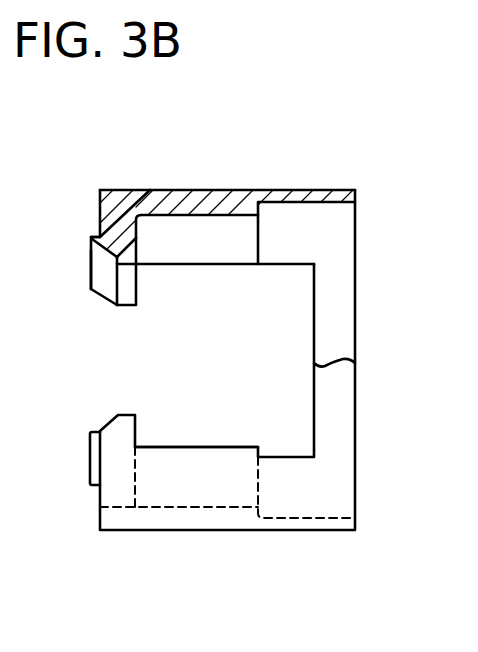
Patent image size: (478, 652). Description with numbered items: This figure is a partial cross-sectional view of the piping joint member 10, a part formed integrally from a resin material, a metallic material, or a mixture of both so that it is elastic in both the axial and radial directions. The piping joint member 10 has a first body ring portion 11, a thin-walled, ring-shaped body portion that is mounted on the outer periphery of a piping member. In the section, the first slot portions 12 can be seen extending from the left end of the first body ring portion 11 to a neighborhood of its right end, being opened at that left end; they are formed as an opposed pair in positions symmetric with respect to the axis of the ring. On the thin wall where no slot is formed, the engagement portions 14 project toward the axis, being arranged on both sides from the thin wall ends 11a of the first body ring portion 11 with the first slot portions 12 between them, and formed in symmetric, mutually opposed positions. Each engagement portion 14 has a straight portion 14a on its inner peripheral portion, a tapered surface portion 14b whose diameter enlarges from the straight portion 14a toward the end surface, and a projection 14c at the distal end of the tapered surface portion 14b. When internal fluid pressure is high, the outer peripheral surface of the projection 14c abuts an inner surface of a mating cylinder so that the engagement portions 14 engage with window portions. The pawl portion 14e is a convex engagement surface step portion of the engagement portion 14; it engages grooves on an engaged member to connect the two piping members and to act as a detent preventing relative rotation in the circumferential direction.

The piping joint member 10 is at (210, 187).
The first body ring portion 11 is at (245, 196).
The thin wall end 11a is at (136, 276).
The first slot portion 12 is at (238, 266).
The engagement portion 14 is at (107, 191).
The straight portion 14a is at (139, 272).
The tapered surface portion 14b is at (108, 284).
The projection 14c is at (91, 236).
The pawl portion 14e is at (91, 289).